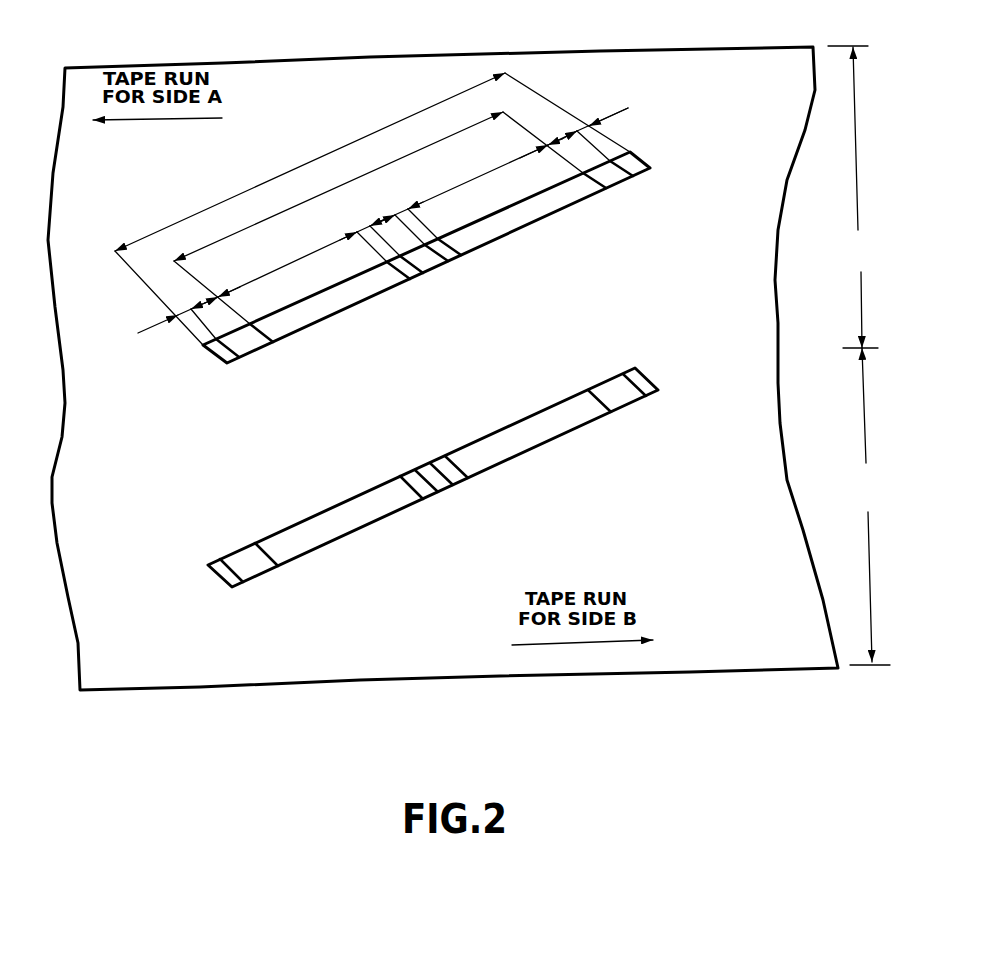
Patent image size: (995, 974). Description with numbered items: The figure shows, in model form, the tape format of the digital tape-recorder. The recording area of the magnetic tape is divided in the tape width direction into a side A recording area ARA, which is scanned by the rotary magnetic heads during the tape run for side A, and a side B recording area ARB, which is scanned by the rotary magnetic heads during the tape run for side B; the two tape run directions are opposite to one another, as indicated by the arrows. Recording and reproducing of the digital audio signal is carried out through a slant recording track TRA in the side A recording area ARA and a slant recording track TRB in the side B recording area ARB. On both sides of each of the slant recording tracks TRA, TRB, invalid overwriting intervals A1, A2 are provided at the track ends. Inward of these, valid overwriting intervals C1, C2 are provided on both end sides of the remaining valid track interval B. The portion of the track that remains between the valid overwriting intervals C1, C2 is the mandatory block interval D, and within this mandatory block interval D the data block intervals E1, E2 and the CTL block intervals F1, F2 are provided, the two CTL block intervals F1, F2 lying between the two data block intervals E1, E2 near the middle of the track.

The slant recording track TRA is at (573, 223).
The slant recording track TRB is at (578, 438).
The valid track interval B is at (297, 166).
The mandatory block interval D is at (342, 188).
The invalid overwriting interval A1 is at (175, 316).
The invalid overwriting interval A2 is at (584, 118).
The valid overwriting interval C1 is at (202, 307).
The valid overwriting interval C2 is at (564, 138).
The data block interval E1 is at (287, 263).
The data block interval E2 is at (478, 178).
The CTL block interval F1 is at (360, 228).
The CTL block interval F2 is at (403, 207).
The side A recording area ARA is at (853, 197).
The side B recording area ARB is at (868, 506).